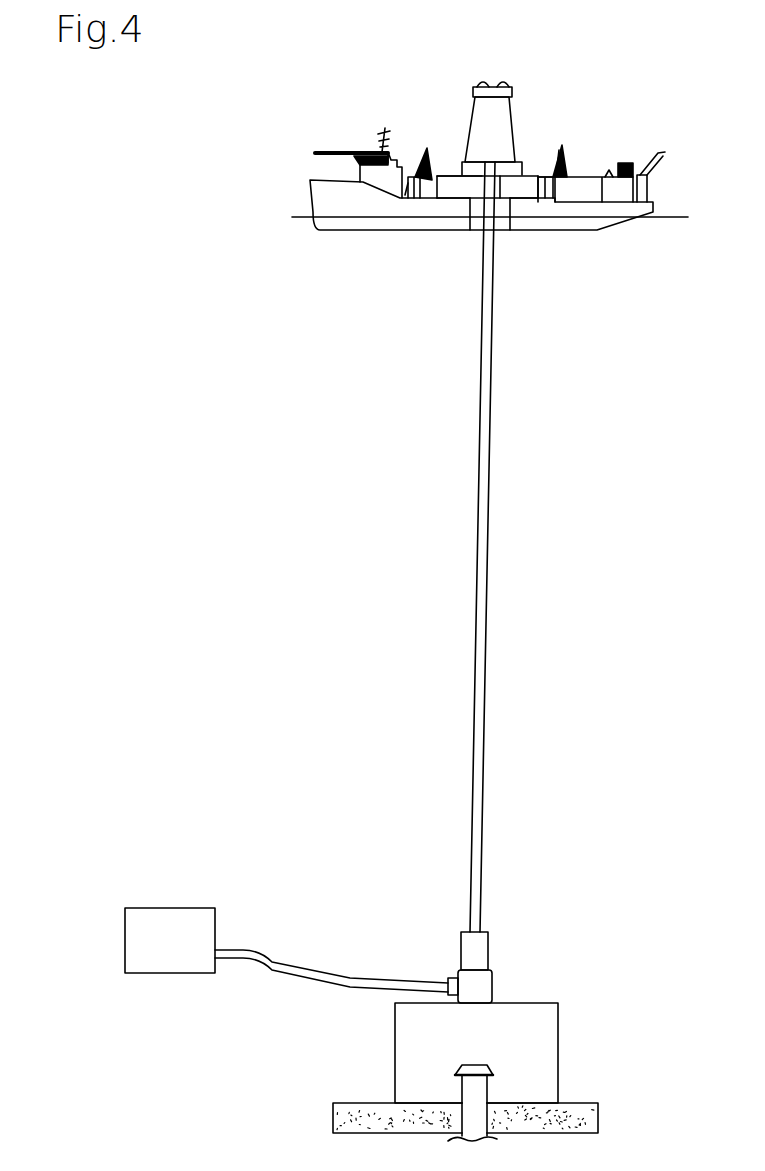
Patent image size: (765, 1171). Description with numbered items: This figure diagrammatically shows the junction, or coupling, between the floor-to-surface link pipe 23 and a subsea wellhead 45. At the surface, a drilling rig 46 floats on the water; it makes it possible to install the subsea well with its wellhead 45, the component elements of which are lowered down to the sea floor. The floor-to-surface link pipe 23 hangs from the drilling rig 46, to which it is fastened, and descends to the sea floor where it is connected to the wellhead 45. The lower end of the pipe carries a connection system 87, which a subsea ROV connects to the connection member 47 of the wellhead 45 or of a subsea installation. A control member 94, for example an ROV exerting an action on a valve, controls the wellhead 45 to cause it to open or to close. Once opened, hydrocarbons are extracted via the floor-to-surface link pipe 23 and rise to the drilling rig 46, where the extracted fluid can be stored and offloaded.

The drilling rig 46 is at (339, 108).
The floor-to-surface link pipe 23 is at (479, 440).
The connection system 87 is at (462, 942).
The connection member 47 is at (483, 995).
The wellhead 45 is at (560, 1060).
The control member 94 is at (286, 950).